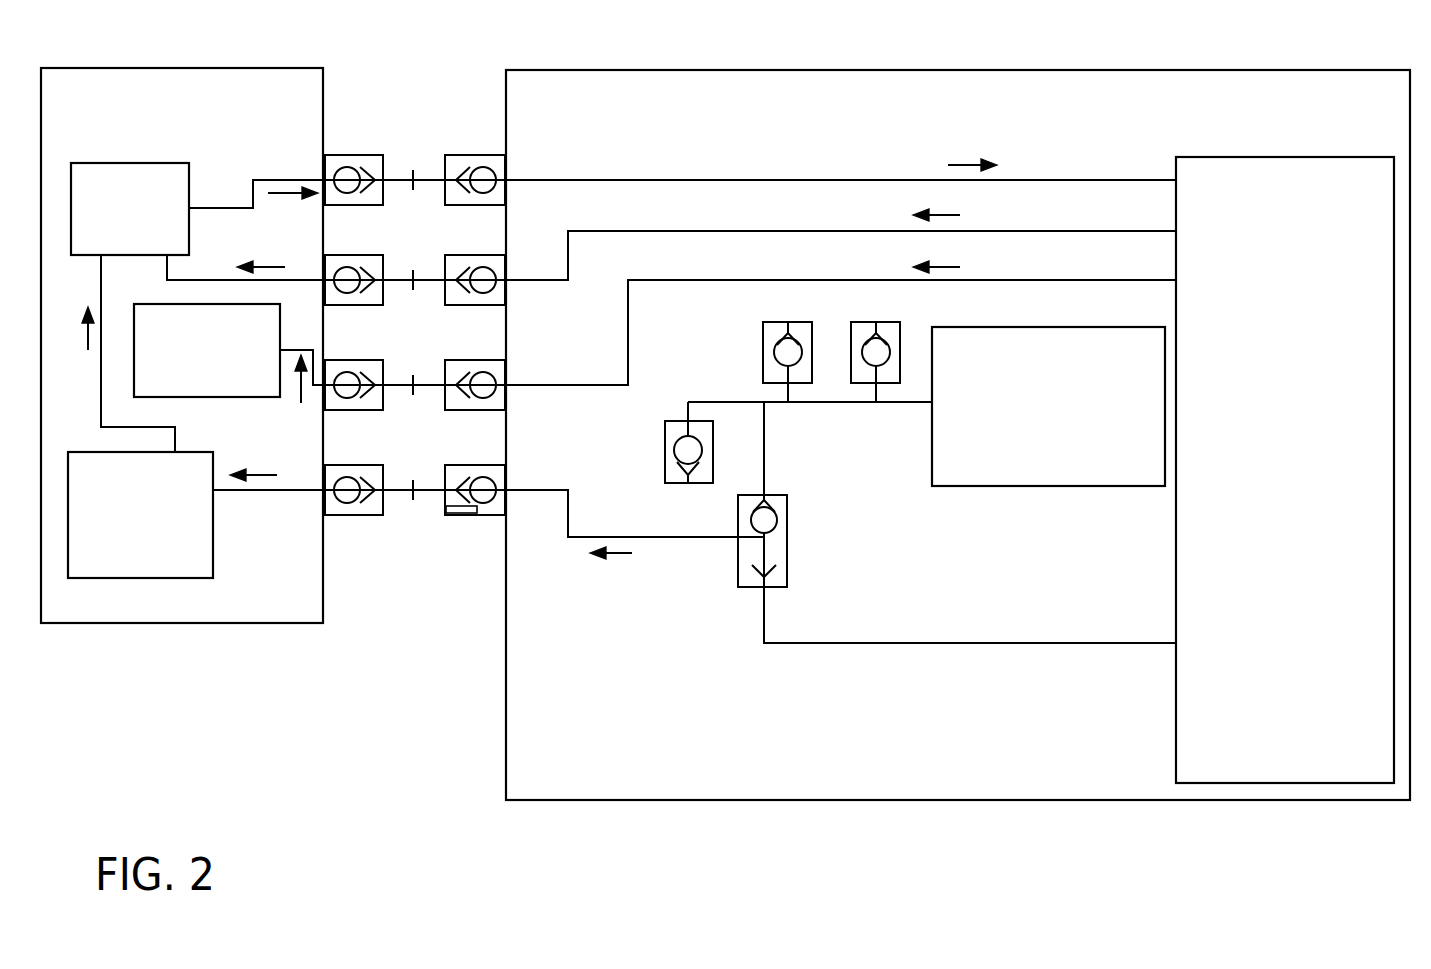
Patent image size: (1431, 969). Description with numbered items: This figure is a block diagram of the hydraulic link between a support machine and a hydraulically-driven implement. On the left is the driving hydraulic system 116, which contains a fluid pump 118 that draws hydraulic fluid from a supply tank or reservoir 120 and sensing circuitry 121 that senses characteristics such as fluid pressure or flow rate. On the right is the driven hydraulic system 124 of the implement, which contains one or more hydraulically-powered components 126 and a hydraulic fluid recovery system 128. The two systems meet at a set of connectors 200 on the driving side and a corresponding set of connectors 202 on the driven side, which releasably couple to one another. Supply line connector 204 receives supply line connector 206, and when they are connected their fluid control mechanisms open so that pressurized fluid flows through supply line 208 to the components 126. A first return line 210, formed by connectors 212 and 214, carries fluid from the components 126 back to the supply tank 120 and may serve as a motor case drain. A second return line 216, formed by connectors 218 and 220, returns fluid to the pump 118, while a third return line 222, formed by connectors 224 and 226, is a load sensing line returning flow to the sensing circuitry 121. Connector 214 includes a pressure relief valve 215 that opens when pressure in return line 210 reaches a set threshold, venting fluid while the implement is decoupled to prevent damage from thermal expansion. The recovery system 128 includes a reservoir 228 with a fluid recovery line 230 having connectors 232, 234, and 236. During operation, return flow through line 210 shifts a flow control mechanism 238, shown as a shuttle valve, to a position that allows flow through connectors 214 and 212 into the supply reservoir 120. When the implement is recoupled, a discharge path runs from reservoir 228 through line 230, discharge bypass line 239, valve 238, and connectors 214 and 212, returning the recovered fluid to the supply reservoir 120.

The hydraulic system (driving system) 116 is at (198, 153).
The fluid pump 118 is at (182, 234).
The sensing circuitry 121 is at (223, 386).
The supply tank/reservoir 120 is at (156, 563).
The hydraulic system (driven system) 124 is at (1220, 106).
The hydraulically-powered component(s) 126 is at (1301, 559).
The hydraulic fluid recovery system 128 is at (647, 688).
The set of connectors 200 is at (371, 100).
The set of connectors 202 is at (472, 100).
The supply line connector 204 is at (382, 155).
The supply line connector 206 is at (449, 155).
The supply line 208 is at (210, 207).
The first return line 210 is at (245, 491).
The connector 212 is at (382, 465).
The connector 214 is at (449, 465).
The pressure relief valve 215 is at (466, 514).
The second return line 216 is at (231, 278).
The connector 218 is at (382, 255).
The connector 220 is at (449, 255).
The third return line 222 is at (295, 348).
The connector 224 is at (382, 360).
The connector 226 is at (449, 360).
The reservoir 228 is at (1064, 470).
The fluid recovery line 230 is at (832, 404).
The connector 232 is at (662, 485).
The connector 234 is at (766, 339).
The connector 236 is at (886, 325).
The flow control mechanism 238 is at (789, 545).
The discharge bypass line 239 is at (764, 468).